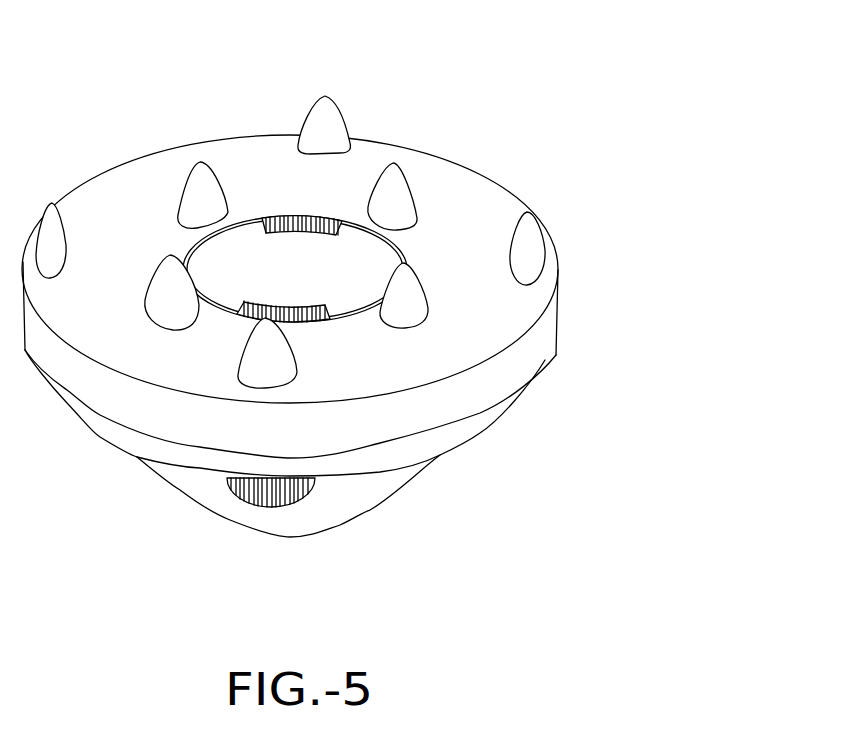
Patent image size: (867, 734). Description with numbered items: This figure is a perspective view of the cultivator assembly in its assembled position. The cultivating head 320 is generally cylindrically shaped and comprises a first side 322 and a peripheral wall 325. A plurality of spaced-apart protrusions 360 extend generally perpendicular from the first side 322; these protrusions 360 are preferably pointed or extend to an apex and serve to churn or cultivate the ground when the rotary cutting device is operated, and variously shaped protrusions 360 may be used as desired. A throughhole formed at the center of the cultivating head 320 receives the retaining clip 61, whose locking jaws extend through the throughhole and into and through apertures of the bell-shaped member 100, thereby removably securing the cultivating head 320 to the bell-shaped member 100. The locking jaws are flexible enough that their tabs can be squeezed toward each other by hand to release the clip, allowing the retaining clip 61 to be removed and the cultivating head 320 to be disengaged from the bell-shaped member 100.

The protrusions 360 is at (207, 187).
The first side 322 is at (443, 188).
The retaining clip 61 is at (340, 285).
The peripheral wall 325 is at (520, 360).
The bell-shaped member 100 is at (353, 503).
The cultivating head 320 is at (113, 470).